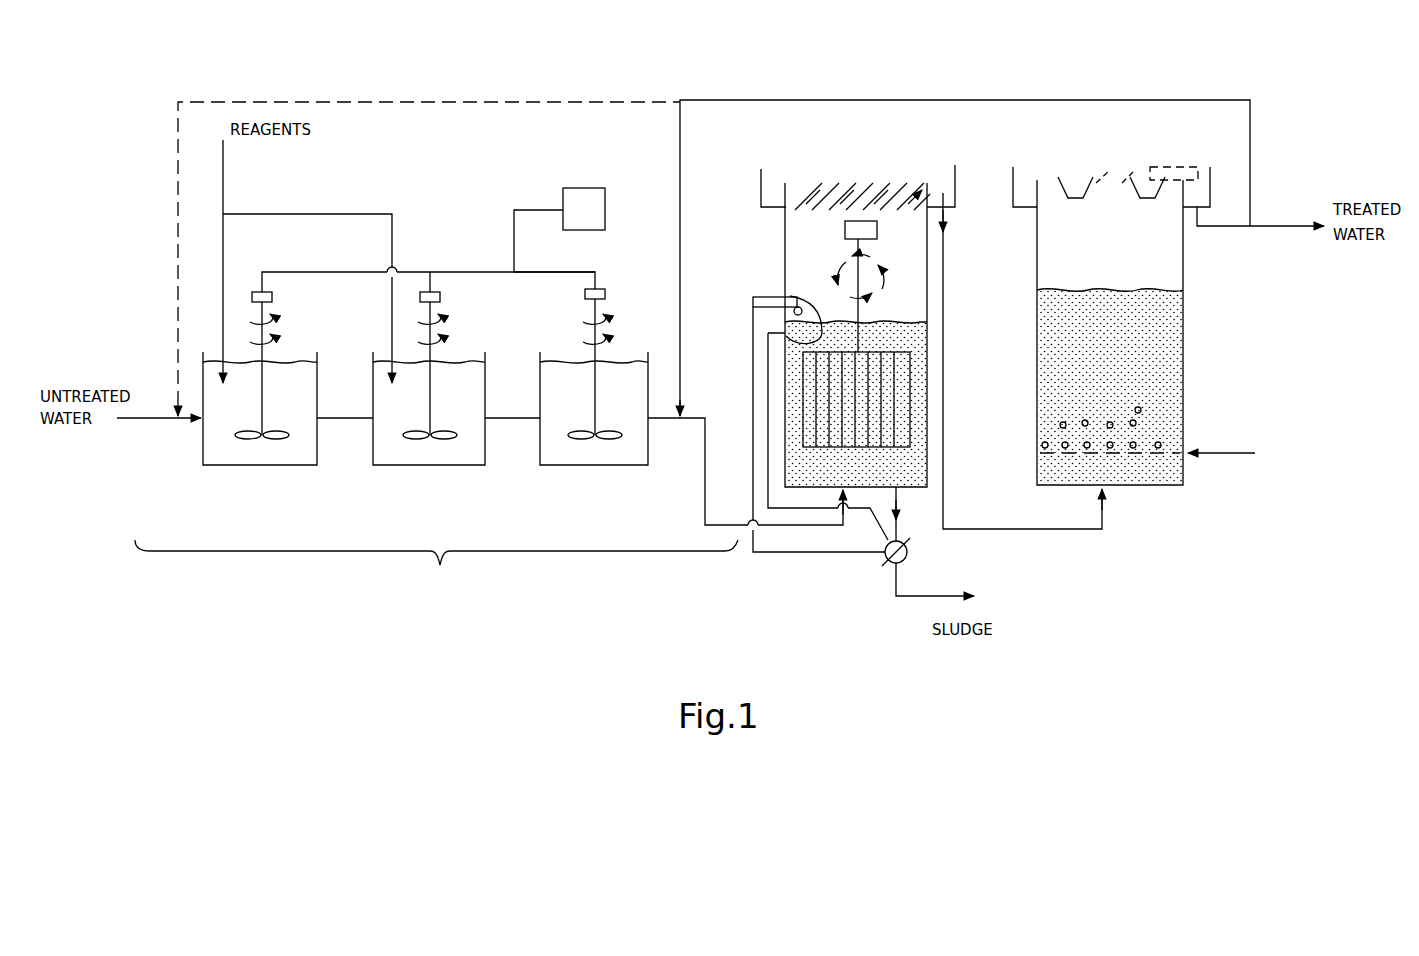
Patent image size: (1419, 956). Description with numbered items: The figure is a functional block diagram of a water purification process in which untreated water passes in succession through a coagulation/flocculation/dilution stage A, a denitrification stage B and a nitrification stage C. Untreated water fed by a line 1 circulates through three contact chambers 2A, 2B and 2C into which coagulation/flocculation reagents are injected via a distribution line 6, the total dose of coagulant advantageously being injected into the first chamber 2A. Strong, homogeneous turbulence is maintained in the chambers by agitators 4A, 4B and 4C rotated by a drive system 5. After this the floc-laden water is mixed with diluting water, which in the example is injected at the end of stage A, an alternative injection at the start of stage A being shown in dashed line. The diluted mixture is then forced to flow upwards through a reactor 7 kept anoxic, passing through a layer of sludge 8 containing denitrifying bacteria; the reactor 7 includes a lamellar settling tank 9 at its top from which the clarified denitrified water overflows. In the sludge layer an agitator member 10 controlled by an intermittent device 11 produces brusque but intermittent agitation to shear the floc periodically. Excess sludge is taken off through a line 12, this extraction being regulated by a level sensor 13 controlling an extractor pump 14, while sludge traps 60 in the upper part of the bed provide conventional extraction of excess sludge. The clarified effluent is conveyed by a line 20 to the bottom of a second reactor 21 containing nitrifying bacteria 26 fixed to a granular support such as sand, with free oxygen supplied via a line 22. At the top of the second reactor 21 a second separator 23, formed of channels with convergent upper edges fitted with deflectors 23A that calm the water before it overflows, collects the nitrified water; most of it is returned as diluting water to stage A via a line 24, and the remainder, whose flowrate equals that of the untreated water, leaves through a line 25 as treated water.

The line 1 is at (148, 420).
The contact chamber 2A is at (248, 465).
The contact chamber 2B is at (418, 465).
The contact chamber 2C is at (580, 465).
The agitator 4A is at (265, 305).
The agitator 4B is at (433, 305).
The agitator 4C is at (598, 305).
The drive system 5 is at (592, 226).
The distribution line 6 is at (223, 171).
The reactor 7 is at (927, 440).
The layer of sludge 8 is at (912, 325).
The lamellar settling tank 9 is at (800, 195).
The agitator member 10 is at (896, 387).
The intermittent device 11 is at (877, 230).
The line 12 is at (897, 577).
The level sensor 13 is at (753, 305).
The extractor pump 14 is at (890, 567).
The line 20 is at (1035, 530).
The second reactor 21 is at (1183, 355).
The line 22 is at (1233, 453).
The second separator 23 is at (1110, 165).
The deflectors 23A is at (1050, 180).
The line 24 is at (1075, 100).
The line 25 is at (1290, 226).
The nitrifying bacteria 26 is at (1123, 389).
The sludge traps 60 is at (822, 318).
The coagulation/flocculation/dilution stage A is at (436, 570).
The denitrification stage B is at (860, 572).
The nitrification stage C is at (1178, 535).